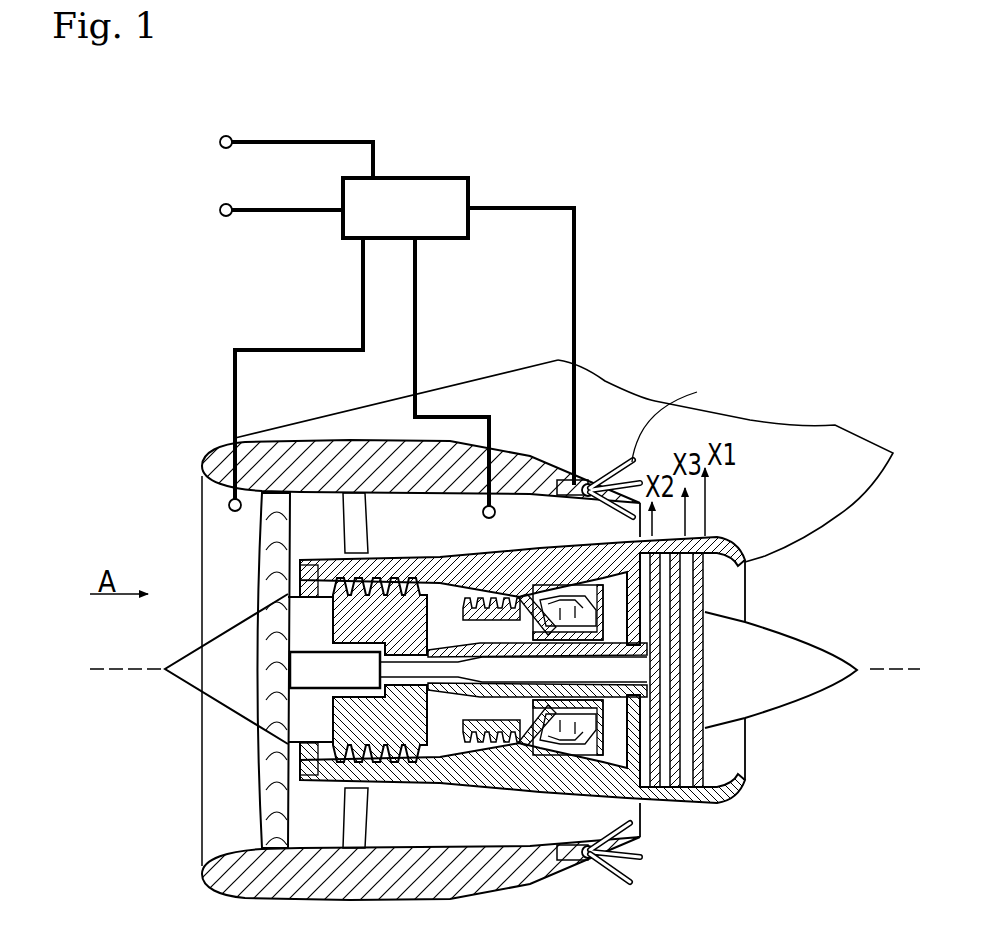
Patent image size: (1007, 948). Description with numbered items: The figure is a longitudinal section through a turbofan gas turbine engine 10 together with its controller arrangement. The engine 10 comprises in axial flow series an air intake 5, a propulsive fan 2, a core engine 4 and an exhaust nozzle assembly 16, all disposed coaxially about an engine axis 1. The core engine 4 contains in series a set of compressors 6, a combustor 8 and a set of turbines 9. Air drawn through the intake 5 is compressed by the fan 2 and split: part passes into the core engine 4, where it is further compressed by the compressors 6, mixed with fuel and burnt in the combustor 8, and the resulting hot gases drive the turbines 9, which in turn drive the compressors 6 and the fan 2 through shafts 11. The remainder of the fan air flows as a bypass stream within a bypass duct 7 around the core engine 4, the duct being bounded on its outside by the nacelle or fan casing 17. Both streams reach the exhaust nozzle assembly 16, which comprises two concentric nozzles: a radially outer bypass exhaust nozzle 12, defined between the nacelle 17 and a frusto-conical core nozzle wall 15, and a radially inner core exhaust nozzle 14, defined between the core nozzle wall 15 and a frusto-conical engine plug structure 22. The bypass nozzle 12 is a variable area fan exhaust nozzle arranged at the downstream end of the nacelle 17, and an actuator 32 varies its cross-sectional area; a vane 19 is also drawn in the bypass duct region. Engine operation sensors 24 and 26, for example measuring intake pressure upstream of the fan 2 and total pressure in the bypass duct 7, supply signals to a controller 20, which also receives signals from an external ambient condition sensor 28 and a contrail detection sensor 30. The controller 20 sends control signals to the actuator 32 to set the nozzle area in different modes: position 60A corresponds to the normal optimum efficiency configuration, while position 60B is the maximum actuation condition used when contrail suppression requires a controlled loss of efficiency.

The engine axis 1 is at (130, 672).
The propulsive fan 2 is at (264, 572).
The core engine 4 is at (407, 783).
The air intake 5 is at (215, 543).
The compressors 6 is at (490, 740).
The bypass duct 7 is at (396, 537).
The combustor 8 is at (570, 748).
The turbines 9 is at (688, 612).
The turbofan gas turbine engine 10 is at (188, 851).
The shafts 11 is at (560, 630).
The bypass exhaust nozzle 12 is at (645, 838).
The core exhaust nozzle 14 is at (750, 562).
The core nozzle wall 15 is at (718, 540).
The exhaust nozzle assembly 16 is at (650, 812).
The nacelle 17 is at (557, 476).
The outlet guide vane 19 is at (355, 835).
The controller 20 is at (418, 221).
The engine plug structure 22 is at (822, 650).
The engine operation sensor 24 is at (228, 505).
The engine operation sensor 26 is at (496, 512).
The ambient condition sensor 28 is at (222, 138).
The contrail detection sensor 30 is at (222, 205).
The actuator 32 is at (681, 415).
The normal actuator position 60A is at (610, 870).
The maximum actuation condition 60B is at (625, 882).